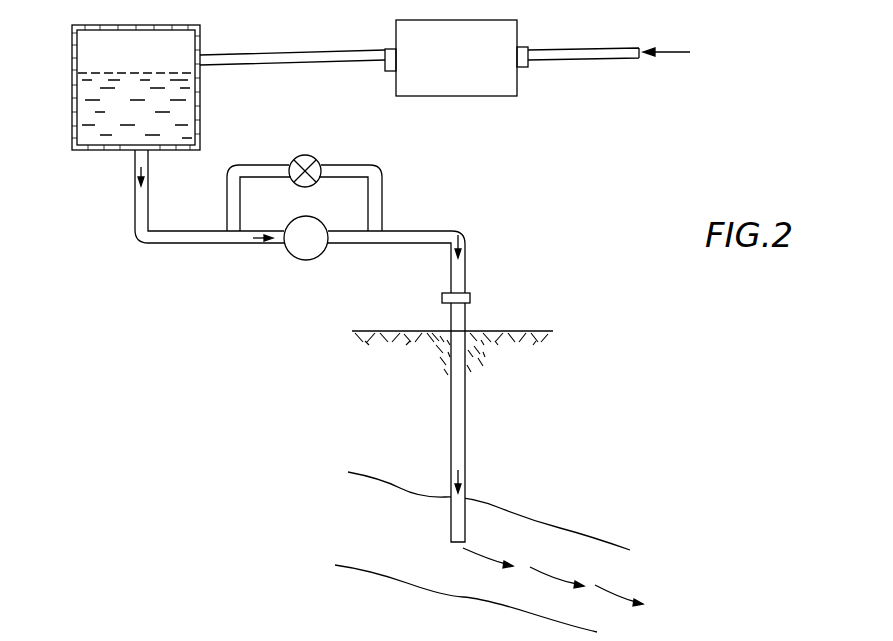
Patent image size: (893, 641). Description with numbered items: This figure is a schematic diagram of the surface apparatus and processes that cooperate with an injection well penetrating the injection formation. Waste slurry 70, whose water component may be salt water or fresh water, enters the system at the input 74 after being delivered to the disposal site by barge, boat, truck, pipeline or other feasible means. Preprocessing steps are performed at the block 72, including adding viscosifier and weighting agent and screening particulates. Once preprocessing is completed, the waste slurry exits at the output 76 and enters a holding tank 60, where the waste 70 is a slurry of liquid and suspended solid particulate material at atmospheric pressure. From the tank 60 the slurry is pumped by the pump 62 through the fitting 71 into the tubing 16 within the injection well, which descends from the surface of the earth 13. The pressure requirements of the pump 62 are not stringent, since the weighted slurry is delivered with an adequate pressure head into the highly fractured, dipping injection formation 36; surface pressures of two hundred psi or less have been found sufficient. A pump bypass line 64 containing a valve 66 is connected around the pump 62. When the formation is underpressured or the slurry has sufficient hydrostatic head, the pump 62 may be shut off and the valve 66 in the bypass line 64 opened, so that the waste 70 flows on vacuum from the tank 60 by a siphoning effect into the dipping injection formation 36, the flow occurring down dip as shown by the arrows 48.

The surface of the earth 13 is at (540, 331).
The tubing 16 is at (466, 320).
The injection formation 36 is at (418, 541).
The arrows 48 is at (618, 595).
The tank 60 is at (202, 110).
The pump 62 is at (297, 257).
The pump bypass line 64 is at (382, 195).
The valve 66 is at (305, 155).
The waste slurry 70 is at (88, 115).
The fitting 71 is at (442, 297).
The preprocessing block 72 is at (518, 25).
The input 74 is at (580, 62).
The output 76 is at (386, 70).